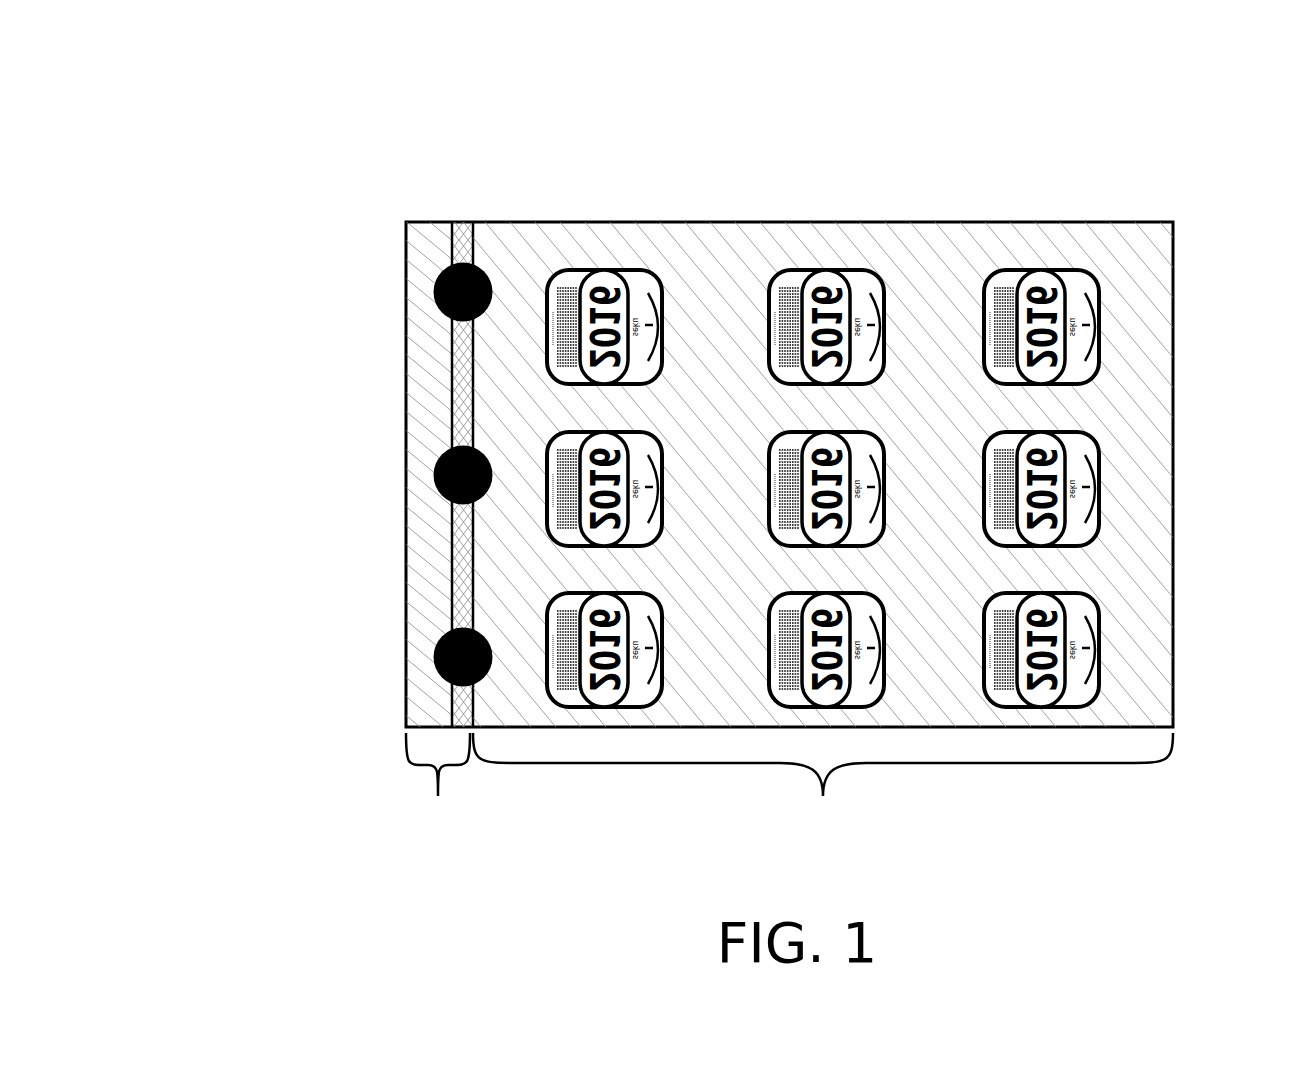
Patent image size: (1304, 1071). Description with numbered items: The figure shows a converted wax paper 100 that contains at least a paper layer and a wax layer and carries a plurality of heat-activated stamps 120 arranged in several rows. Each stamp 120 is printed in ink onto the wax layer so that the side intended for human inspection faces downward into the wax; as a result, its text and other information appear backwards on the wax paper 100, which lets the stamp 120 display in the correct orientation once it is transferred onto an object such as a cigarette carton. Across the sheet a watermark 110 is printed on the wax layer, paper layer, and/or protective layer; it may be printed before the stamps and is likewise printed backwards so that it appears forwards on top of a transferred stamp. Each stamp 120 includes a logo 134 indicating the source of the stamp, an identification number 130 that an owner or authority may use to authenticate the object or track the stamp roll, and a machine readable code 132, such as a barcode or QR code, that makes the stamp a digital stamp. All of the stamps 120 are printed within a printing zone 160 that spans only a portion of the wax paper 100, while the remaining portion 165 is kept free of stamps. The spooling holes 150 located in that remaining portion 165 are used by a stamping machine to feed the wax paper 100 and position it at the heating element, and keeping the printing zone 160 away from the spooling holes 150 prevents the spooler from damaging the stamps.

The converted wax paper 100 is at (260, 232).
The watermark 110 is at (730, 293).
The heat-activated stamp 120 is at (1097, 235).
The identification number 130 is at (1028, 290).
The machine readable code 132 is at (1002, 300).
The logo 134 is at (1092, 336).
The spooling holes 150 is at (440, 488).
The printing zone 160 is at (823, 790).
The remaining portion 165 is at (439, 531).